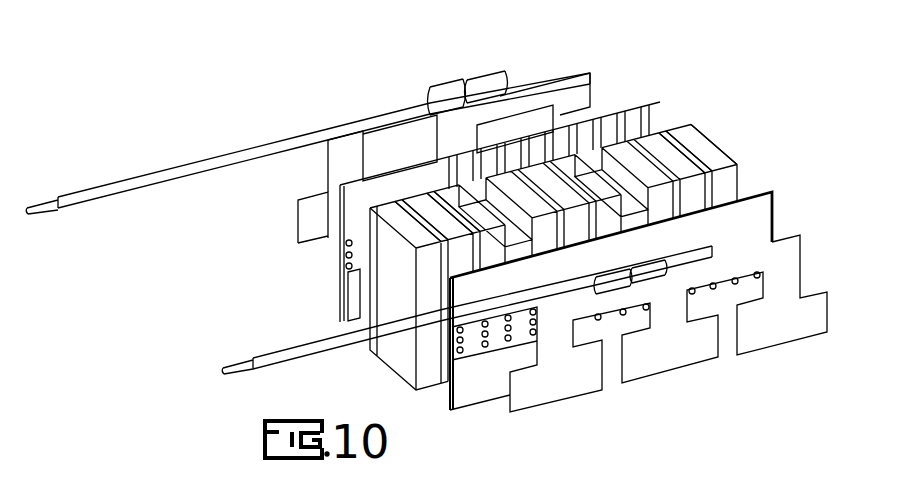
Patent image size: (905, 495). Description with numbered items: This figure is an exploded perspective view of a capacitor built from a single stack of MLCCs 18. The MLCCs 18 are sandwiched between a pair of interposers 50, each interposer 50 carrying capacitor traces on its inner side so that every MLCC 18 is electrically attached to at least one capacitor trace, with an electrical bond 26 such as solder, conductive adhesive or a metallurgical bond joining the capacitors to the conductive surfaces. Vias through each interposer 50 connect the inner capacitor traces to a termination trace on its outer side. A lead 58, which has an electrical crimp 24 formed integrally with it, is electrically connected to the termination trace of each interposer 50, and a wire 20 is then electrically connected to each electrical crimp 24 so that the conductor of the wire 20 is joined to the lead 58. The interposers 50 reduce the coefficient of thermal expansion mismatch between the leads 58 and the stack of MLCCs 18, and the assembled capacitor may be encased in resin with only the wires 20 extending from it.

The MLCC 18 is at (472, 193).
The wire 20 is at (290, 352).
The electrical crimp 24 is at (484, 86).
The electrical bond 26 is at (410, 200).
The interposer 50 is at (772, 192).
The lead 58 is at (828, 282).